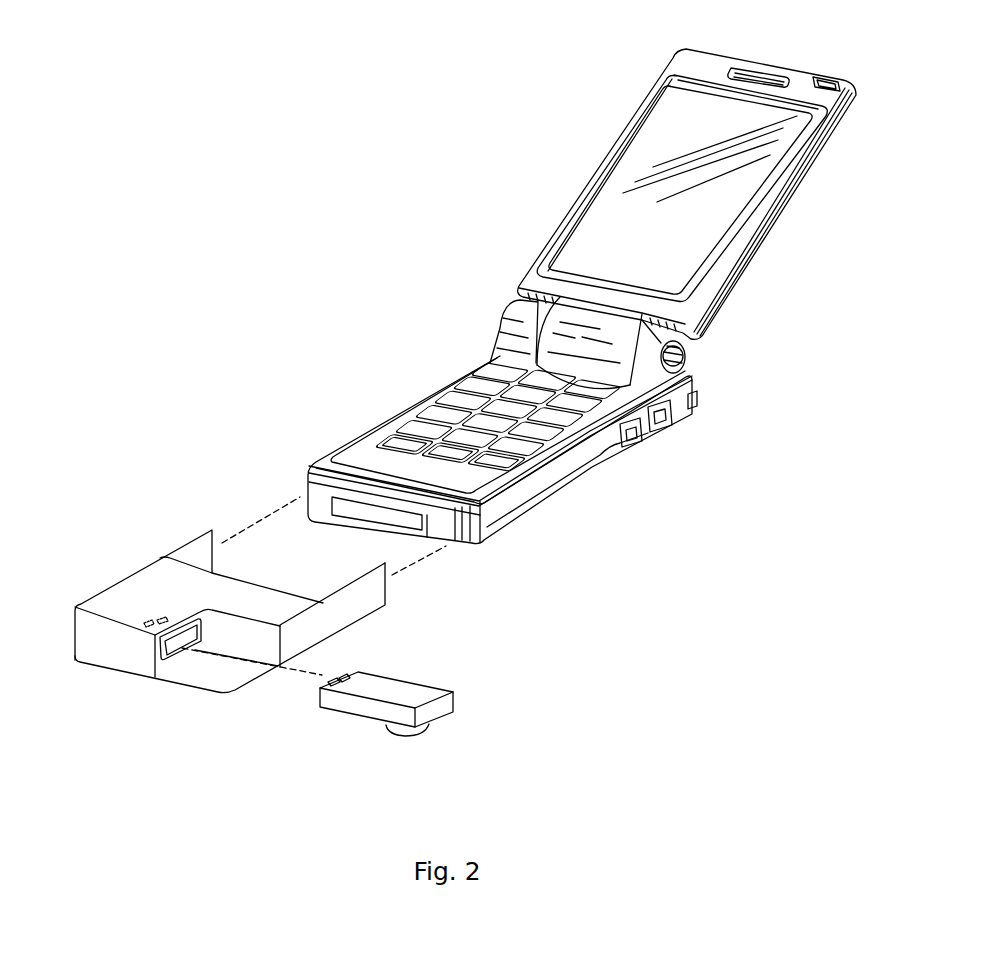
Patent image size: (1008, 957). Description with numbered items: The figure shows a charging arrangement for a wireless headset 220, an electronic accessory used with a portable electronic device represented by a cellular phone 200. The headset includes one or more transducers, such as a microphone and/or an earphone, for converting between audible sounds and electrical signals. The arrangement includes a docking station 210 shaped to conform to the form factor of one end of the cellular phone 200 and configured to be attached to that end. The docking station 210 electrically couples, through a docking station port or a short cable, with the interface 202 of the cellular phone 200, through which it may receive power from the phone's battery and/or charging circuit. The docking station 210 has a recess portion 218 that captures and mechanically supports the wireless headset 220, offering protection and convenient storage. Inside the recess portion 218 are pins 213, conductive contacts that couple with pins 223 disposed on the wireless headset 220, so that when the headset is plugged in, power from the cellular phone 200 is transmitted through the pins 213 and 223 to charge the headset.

The cellular phone 200 is at (560, 308).
The interface 202 is at (327, 498).
The docking station 210 is at (259, 624).
The pins 213 is at (160, 619).
The recess portion 218 is at (167, 648).
The wireless headset 220 is at (317, 711).
The pins 223 is at (345, 675).